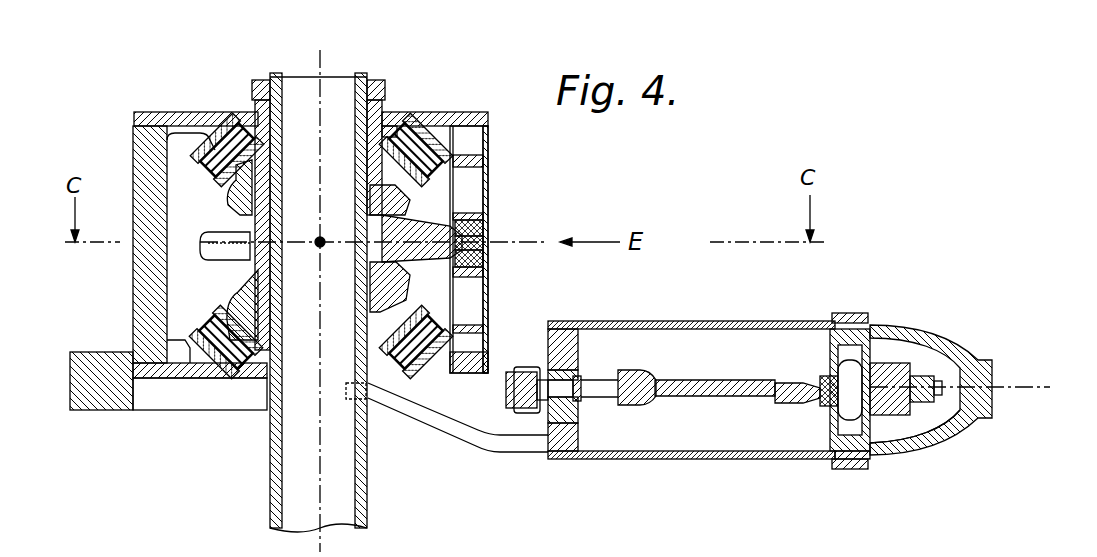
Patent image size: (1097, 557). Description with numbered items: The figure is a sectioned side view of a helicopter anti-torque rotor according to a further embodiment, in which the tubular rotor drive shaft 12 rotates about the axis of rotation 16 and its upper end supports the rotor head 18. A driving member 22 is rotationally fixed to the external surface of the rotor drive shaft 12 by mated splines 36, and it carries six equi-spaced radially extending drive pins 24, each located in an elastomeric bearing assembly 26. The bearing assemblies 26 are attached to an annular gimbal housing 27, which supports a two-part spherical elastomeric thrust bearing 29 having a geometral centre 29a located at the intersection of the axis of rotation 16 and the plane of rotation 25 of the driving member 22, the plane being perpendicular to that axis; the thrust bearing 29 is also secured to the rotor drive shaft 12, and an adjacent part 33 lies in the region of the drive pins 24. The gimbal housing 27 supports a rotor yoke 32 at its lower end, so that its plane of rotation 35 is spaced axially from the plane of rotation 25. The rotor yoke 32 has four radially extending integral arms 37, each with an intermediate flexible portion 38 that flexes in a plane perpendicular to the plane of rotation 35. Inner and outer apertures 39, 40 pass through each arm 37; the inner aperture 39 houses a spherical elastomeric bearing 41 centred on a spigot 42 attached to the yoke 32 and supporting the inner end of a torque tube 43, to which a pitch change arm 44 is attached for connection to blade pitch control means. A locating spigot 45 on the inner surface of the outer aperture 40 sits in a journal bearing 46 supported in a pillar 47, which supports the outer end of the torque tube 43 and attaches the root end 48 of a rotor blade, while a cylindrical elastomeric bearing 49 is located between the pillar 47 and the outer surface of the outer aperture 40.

The tubular rotor drive shaft 12 is at (388, 112).
The axis of rotation 16 is at (322, 76).
The rotor head 18 is at (208, 449).
The driving member 22 is at (413, 233).
The drive pins 24 is at (492, 241).
The plane of rotation of the driving member 25 is at (508, 244).
The elastomeric bearing assembly 26 is at (510, 180).
The annular gimbal housing 27 is at (133, 143).
The spherical elastomeric thrust bearing 29 is at (255, 150).
The geometral centre 29a is at (316, 240).
The rotor yoke 32 is at (524, 366).
The bushing 33 is at (492, 222).
The plane of rotation of the rotor yoke 35 is at (1010, 391).
The mated splines 36 is at (404, 248).
The arms 37 is at (943, 413).
The intermediate flexible portion 38 is at (711, 390).
The inner aperture 39 is at (620, 398).
The outer aperture 40 is at (830, 378).
The spherical elastomeric bearing 41 is at (568, 330).
The spigot 42 is at (580, 382).
The torque tube 43 is at (768, 325).
The pitch change arm 44 is at (453, 428).
The locating spigot 45 is at (853, 372).
The journal bearing 46 is at (828, 404).
The pillar 47 is at (876, 350).
The root end of rotor blade 48 is at (957, 355).
The cylindrical elastomeric bearing 49 is at (890, 405).